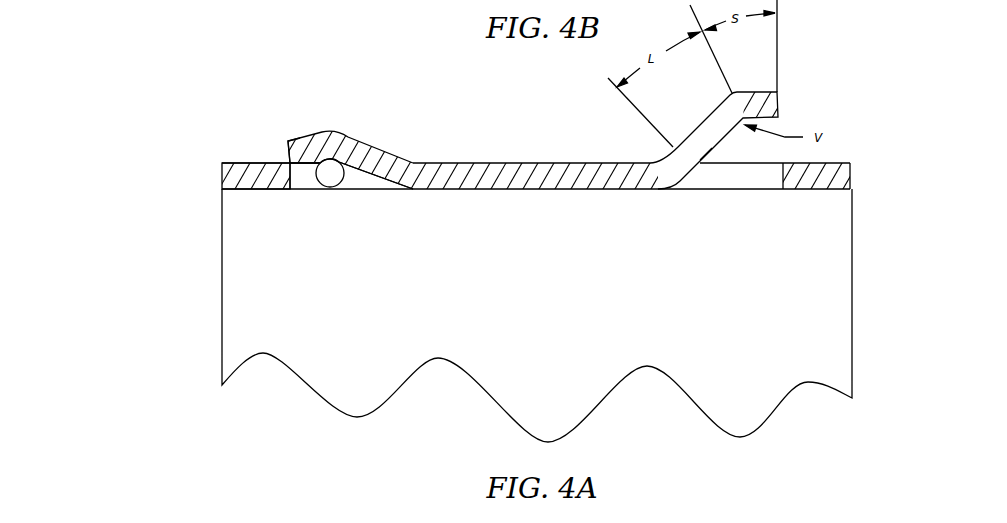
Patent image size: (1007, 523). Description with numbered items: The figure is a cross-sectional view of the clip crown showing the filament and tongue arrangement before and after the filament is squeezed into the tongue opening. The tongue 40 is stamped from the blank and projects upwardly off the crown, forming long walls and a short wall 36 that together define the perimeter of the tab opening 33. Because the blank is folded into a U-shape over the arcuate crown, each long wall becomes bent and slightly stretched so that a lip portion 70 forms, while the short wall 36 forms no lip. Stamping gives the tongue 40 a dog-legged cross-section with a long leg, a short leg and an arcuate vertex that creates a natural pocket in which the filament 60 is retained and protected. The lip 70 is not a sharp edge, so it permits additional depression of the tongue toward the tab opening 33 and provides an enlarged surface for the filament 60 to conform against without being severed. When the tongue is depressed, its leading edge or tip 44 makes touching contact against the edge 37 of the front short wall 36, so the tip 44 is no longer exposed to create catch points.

The tab opening 33 is at (408, 223).
The short wall 36 is at (225, 211).
The edge of short wall 37 is at (203, 136).
The tongue 40 is at (361, 115).
The leading edge 44 is at (189, 89).
The filament 60 is at (365, 235).
The lip portion 70 is at (285, 235).